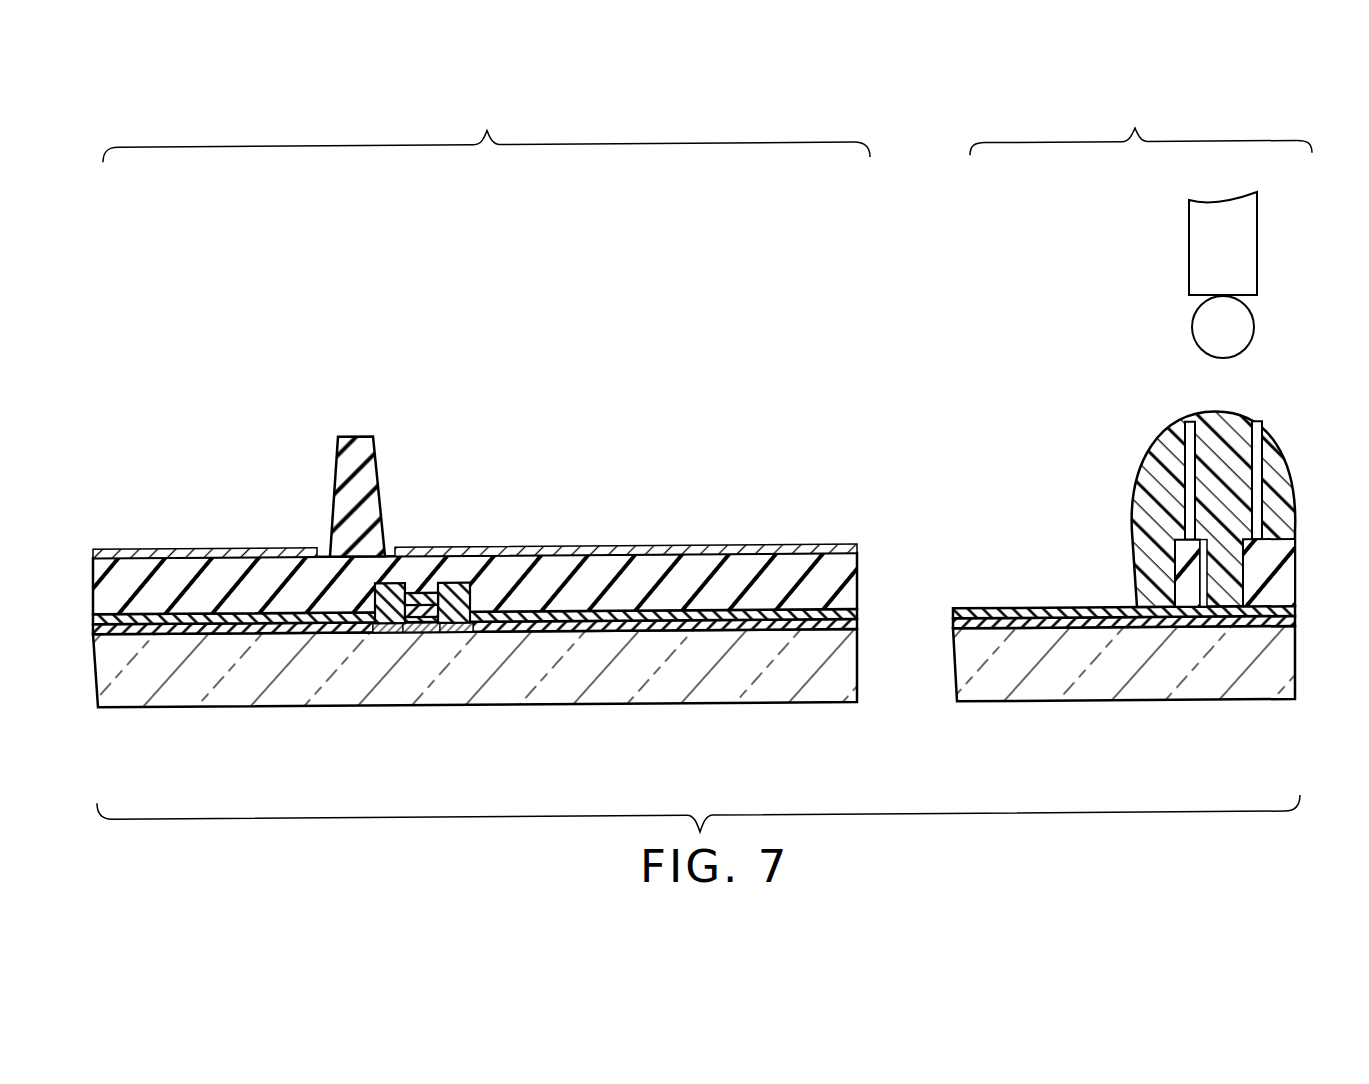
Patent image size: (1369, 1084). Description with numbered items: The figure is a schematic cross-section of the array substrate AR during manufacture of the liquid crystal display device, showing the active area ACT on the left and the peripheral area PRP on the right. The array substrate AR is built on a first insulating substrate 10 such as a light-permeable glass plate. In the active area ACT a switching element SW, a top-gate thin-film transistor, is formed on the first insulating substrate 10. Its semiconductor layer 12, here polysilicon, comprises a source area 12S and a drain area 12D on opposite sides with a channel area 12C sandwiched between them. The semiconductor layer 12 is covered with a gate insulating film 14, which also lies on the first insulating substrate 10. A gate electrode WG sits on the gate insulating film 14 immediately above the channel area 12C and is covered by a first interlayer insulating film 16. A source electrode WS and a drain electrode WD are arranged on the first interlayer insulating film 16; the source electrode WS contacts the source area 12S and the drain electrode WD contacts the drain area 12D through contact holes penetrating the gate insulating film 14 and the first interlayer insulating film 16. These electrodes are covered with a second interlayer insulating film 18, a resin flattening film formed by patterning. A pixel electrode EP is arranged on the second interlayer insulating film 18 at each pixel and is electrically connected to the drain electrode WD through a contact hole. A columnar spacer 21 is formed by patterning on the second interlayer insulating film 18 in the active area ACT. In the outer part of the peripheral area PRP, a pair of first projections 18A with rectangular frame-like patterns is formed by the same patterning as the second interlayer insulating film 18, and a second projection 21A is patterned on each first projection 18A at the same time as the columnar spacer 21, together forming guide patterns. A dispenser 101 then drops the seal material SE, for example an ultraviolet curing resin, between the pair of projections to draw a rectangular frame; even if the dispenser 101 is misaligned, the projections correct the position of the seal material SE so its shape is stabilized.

The first insulating substrate 10 is at (100, 667).
The semiconductor layer 12 is at (508, 752).
The source area 12S is at (387, 636).
The channel area 12C is at (418, 636).
The drain area 12D is at (450, 636).
The gate insulating film 14 is at (97, 630).
The first interlayer insulating film 16 is at (95, 618).
The second interlayer insulating film 18 is at (96, 583).
The first projections 18A is at (1200, 558).
The columnar spacer 21 is at (363, 448).
The second projection 21A is at (1196, 455).
The dispenser 101 is at (1246, 248).
The active area ACT is at (486, 131).
The peripheral area PRP is at (1141, 125).
The array substrate AR is at (90, 686).
The pixel electrode EP is at (177, 551).
The seal material SE is at (1142, 470).
The switching element SW is at (369, 646).
The source electrode WS is at (378, 588).
The gate electrode WG is at (418, 597).
The drain electrode WD is at (460, 582).